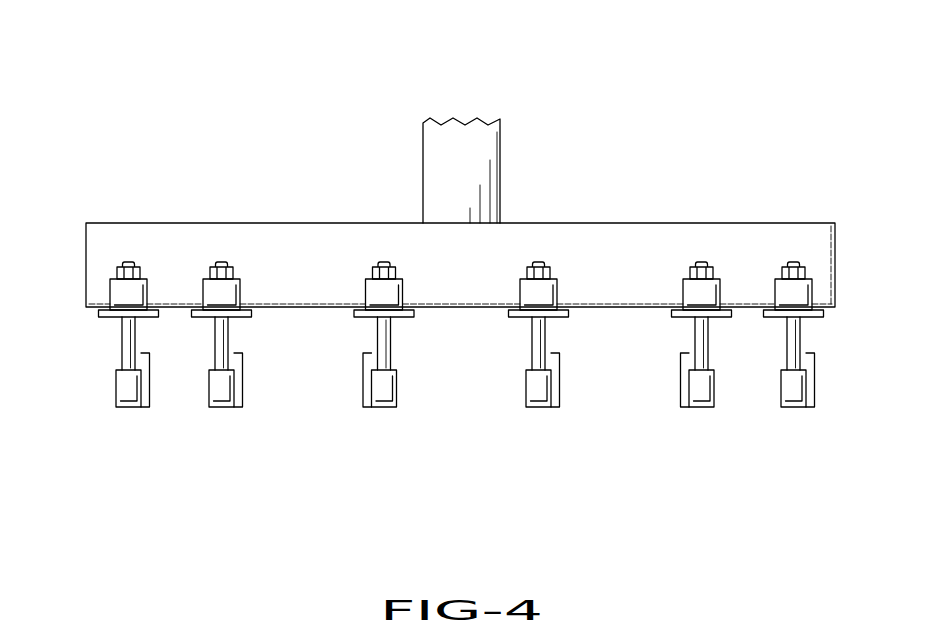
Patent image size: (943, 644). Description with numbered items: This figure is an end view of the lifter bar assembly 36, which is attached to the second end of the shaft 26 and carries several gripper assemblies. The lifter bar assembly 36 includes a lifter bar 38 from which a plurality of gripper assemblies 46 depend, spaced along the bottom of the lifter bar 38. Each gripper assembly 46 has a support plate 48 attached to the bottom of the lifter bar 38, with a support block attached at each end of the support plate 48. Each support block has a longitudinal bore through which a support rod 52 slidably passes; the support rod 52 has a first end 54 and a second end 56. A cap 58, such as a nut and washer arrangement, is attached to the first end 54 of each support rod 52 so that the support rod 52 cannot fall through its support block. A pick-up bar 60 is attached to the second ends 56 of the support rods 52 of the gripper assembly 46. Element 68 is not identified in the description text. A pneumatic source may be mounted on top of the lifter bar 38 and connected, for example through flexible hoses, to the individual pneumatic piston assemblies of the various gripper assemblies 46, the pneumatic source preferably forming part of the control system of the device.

The lifter bar assembly 36 is at (92, 121).
The lifter bar 38 is at (580, 237).
The shaft 26 is at (443, 147).
The first end 54 is at (127, 262).
The cap 58 is at (113, 279).
The support plate 48 is at (107, 317).
The support rod 52 is at (125, 330).
The second end 56 is at (122, 367).
The pick-up bar 60 is at (128, 393).
The gripper assembly 46 is at (143, 420).
The spacer bracket 68 is at (681, 373).